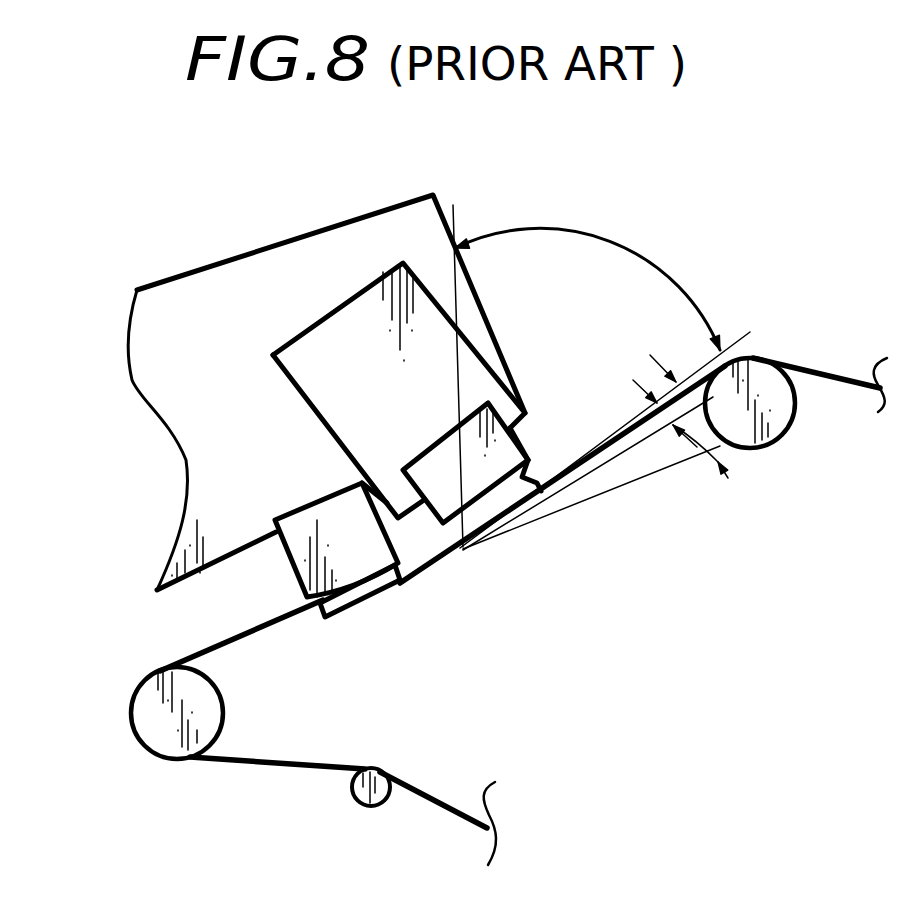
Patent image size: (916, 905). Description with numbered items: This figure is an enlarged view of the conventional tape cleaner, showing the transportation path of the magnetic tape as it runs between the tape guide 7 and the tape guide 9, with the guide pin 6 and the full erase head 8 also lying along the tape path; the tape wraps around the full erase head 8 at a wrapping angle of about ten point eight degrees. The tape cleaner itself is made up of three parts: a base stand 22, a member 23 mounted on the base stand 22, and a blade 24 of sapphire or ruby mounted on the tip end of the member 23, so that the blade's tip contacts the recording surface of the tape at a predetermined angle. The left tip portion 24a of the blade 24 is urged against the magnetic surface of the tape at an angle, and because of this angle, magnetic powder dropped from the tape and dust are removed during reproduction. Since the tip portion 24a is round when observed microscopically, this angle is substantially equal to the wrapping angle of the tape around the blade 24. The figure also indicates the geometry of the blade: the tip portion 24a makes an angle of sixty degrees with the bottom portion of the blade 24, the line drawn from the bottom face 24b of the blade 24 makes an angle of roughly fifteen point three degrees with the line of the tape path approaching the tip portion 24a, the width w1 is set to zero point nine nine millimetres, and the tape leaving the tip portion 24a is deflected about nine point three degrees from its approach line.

The guide pin 6 is at (374, 808).
The tape guide 7 is at (132, 727).
The full erase head 8 is at (275, 540).
The tape guide 9 is at (787, 440).
The base stand 22 is at (130, 322).
The member 23 is at (330, 313).
The blade 24 is at (420, 457).
The tip portion 24a is at (463, 548).
The bottom face 24b is at (543, 482).
The width w1 is at (666, 414).